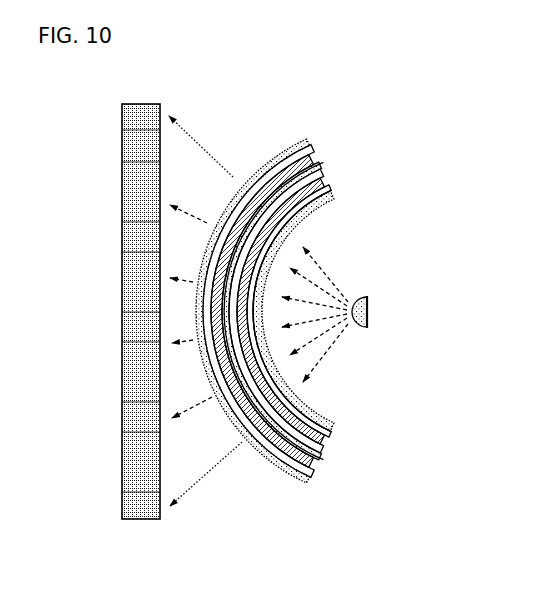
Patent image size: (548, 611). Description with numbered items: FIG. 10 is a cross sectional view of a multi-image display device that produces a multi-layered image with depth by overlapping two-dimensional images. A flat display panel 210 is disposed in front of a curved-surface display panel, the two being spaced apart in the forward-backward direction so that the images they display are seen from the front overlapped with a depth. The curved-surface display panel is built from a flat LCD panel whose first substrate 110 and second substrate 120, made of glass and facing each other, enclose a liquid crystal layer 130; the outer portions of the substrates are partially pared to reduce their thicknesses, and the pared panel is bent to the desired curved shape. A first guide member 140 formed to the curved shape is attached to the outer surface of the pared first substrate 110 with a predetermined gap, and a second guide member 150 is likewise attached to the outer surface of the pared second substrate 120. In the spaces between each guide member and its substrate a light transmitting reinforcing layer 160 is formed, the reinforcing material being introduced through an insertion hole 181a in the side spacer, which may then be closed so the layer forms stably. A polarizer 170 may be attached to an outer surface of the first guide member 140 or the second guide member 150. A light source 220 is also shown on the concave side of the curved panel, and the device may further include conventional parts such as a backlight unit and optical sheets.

The first substrate 110 is at (240, 343).
The second substrate 120 is at (325, 467).
The liquid crystal layer 130 is at (328, 455).
The first guide member 140 is at (333, 432).
The second guide member 150 is at (318, 485).
The light transmitting reinforcing layer 160 is at (197, 303).
The polarizer 170 is at (323, 423).
The insertion hole 181a is at (205, 365).
The flat display panel 210 is at (143, 520).
The light source 220 is at (370, 313).